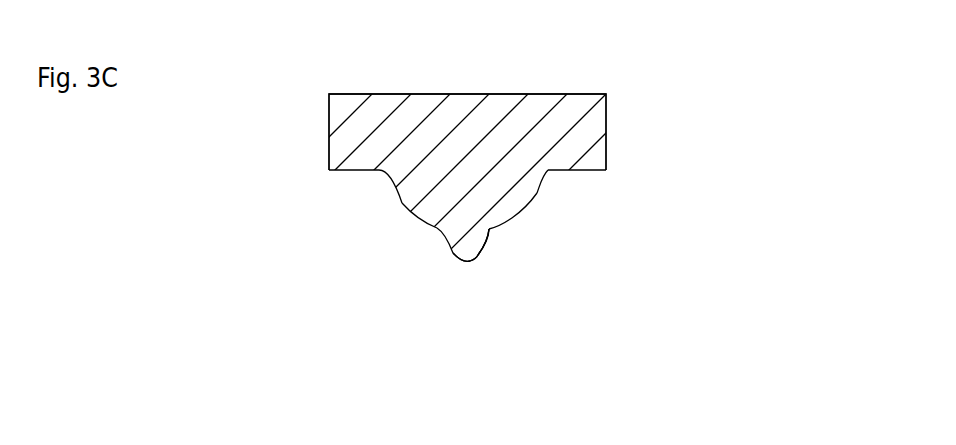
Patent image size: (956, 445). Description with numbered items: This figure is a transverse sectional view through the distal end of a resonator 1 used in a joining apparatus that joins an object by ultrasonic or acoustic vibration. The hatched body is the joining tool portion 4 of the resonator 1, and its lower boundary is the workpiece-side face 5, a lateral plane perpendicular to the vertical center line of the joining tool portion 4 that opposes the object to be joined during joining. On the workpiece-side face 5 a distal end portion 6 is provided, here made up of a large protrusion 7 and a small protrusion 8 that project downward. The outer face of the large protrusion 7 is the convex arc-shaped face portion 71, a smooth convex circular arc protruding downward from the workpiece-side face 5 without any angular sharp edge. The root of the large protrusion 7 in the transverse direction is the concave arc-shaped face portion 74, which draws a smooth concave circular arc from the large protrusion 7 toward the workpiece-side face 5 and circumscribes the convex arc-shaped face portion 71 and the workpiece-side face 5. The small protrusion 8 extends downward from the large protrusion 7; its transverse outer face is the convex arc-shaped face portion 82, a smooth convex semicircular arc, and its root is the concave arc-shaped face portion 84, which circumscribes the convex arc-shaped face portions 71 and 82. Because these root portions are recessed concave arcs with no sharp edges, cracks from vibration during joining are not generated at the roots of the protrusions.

The resonator 1 is at (535, 91).
The joining tool portion 4 is at (467, 132).
The workpiece-side face 5 is at (343, 172).
The concave arc-shaped face portion 74 is at (380, 177).
The convex arc-shaped face portion 71 is at (400, 210).
The concave arc-shaped face portion 84 is at (437, 238).
The convex arc-shaped face portion 82 is at (452, 265).
The small protrusion 8 is at (464, 262).
The large protrusion 7 is at (490, 233).
The distal end portion 6 is at (557, 282).